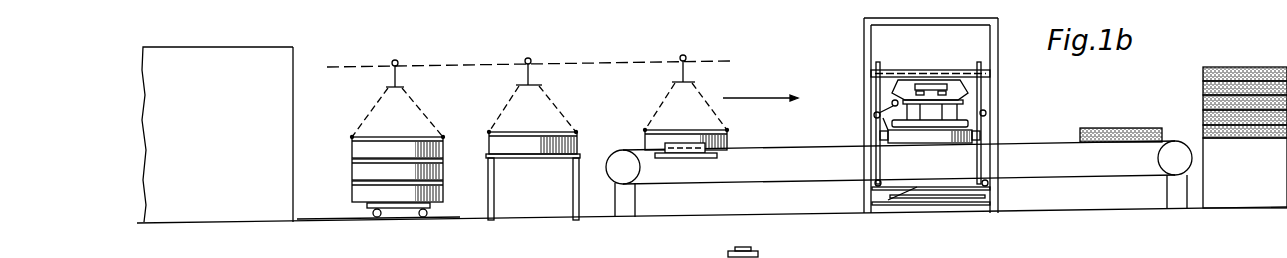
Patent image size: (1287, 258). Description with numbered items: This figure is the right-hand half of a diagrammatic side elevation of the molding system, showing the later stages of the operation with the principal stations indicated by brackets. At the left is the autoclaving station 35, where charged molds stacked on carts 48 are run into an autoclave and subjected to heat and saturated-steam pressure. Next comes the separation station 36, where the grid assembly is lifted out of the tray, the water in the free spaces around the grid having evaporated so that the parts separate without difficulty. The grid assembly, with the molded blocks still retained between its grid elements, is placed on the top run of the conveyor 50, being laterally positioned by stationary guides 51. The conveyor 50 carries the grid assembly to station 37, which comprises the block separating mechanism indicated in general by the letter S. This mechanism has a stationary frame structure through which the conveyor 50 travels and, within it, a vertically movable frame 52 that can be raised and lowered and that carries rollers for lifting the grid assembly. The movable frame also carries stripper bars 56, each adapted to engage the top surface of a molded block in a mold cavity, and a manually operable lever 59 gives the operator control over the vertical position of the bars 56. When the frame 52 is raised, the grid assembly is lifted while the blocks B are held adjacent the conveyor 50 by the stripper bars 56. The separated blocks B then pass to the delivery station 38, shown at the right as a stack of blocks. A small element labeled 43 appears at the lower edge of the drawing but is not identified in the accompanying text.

The autoclaving station 35 is at (300, 233).
The cart 48 is at (400, 206).
The separation station for mold grid assembly 36 is at (590, 226).
The stationary guides 51 is at (693, 155).
The conveyor 50 is at (787, 183).
The block separating mechanism S is at (861, 99).
The manually operable lever 59 is at (914, 84).
The vertically movable frame 52 is at (982, 95).
The stripper bars 56 is at (970, 125).
The block separation station 37 is at (935, 133).
The adjacent apparatus (partially shown) 43 is at (780, 251).
The blocks B is at (1118, 127).
The delivery station 38 is at (1286, 213).